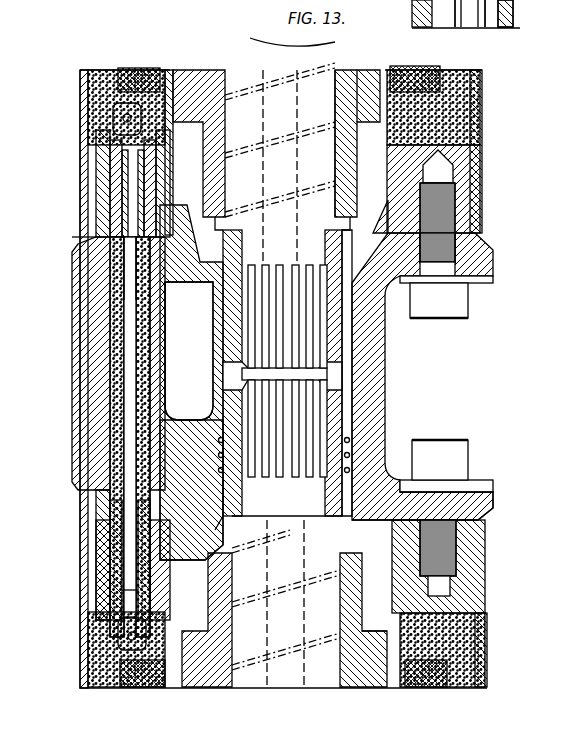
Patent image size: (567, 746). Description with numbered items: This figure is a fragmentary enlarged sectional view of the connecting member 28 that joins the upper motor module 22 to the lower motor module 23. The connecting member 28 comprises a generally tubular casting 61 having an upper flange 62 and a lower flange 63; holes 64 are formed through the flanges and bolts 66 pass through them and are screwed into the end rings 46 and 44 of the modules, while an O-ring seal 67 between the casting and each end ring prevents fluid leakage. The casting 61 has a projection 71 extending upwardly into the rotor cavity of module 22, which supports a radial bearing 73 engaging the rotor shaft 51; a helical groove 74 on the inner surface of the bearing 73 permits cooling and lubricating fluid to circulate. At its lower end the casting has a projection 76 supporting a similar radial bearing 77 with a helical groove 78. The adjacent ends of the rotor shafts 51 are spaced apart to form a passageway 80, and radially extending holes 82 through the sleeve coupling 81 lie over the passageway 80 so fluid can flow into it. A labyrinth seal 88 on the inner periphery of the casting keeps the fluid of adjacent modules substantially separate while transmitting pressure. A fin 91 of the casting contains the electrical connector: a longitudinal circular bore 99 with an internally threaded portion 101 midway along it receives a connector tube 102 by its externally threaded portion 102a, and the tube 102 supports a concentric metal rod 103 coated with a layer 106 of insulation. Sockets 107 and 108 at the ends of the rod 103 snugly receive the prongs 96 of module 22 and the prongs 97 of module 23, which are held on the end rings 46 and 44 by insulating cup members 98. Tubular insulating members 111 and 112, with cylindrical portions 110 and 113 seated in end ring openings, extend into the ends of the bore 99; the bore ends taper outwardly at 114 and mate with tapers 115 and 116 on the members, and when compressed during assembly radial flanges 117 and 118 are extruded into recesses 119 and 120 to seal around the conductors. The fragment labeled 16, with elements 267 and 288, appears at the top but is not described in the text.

The housing fragment 16 is at (513, 12).
The rod 267 is at (458, 28).
The sleeve 288 is at (488, 28).
The motor module 22 is at (483, 100).
The motor module 23 is at (488, 628).
The connecting member 28 is at (425, 363).
The end ring 44 is at (470, 593).
The end ring 46 is at (483, 158).
The rotor shaft 51 is at (318, 75).
The tubular casting 61 is at (385, 340).
The upper flange 62 is at (490, 245).
The lower flange 63 is at (493, 505).
The holes 64 is at (512, 455).
The bolts 66 is at (510, 425).
The O-ring seal 67 is at (505, 532).
The projection 71 is at (360, 72).
The radial bearing 73 is at (340, 105).
The helical groove 74 is at (246, 145).
The projection 76 is at (447, 668).
The radial bearing 77 is at (362, 640).
The helical groove 78 is at (342, 580).
The passageway 80 is at (290, 378).
The sleeve coupling 81 is at (330, 415).
The radially extending holes 82 is at (335, 372).
The labyrinth seal 88 is at (352, 460).
The fin 91 is at (90, 362).
The metal prongs 96 is at (100, 165).
The metal prongs 97 is at (115, 560).
The cup members 98 is at (95, 630).
The circular bore 99 is at (170, 322).
The internally threaded portion 101 is at (170, 350).
The connector tube 102 is at (170, 372).
The externally threaded portion 102a is at (112, 338).
The metal rod 103 is at (130, 372).
The layer of insulation 106 is at (118, 420).
The metal socket 107 is at (112, 318).
The metal socket 108 is at (118, 440).
The cylindrical portion 110 is at (100, 498).
The tubular insulating member 111 is at (118, 205).
The tubular insulating member 112 is at (112, 536).
The cylindrical portion 113 is at (120, 580).
The tapered end of bore 114 is at (118, 402).
The tapered end 115 is at (72, 237).
The tapered end 116 is at (210, 455).
The radial flange 117 is at (187, 200).
The radial flange 118 is at (215, 520).
The recess 119 is at (193, 280).
The recess 120 is at (220, 497).